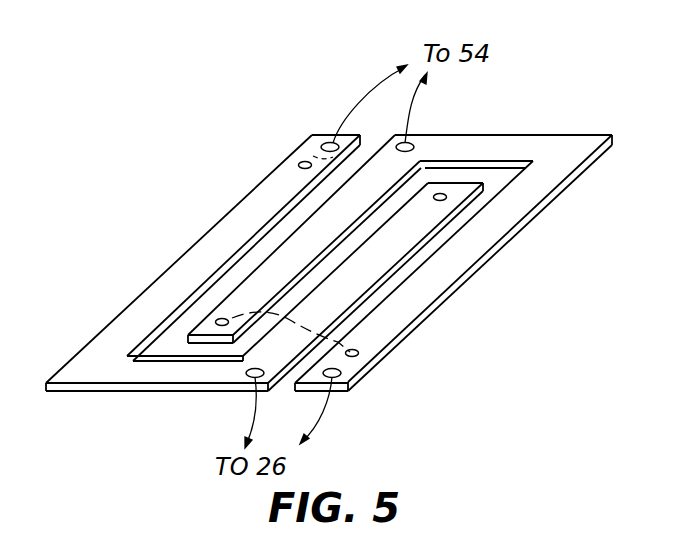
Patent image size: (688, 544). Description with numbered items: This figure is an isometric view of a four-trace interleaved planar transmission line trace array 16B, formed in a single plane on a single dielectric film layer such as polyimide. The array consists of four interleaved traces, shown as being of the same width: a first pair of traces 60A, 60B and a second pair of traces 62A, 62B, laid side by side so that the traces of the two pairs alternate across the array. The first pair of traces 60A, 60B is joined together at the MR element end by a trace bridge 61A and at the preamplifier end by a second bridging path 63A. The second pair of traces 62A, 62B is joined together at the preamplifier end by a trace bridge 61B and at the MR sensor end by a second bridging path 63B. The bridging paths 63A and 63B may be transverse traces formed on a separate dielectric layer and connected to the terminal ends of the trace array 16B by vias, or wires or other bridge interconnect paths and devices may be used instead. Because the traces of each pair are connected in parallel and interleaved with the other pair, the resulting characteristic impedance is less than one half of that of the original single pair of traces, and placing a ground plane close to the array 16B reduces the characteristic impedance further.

The interleaved transmission line trace array 16B is at (329, 265).
The first trace of first pair 60A is at (264, 271).
The second trace of first pair 60B is at (373, 265).
The trace bridge 61A is at (155, 374).
The trace bridge 61B is at (500, 133).
The first trace of second pair 62A is at (213, 278).
The second trace of second pair 62B is at (418, 313).
The second bridging path 63A is at (440, 193).
The second bridging path 63B is at (305, 326).